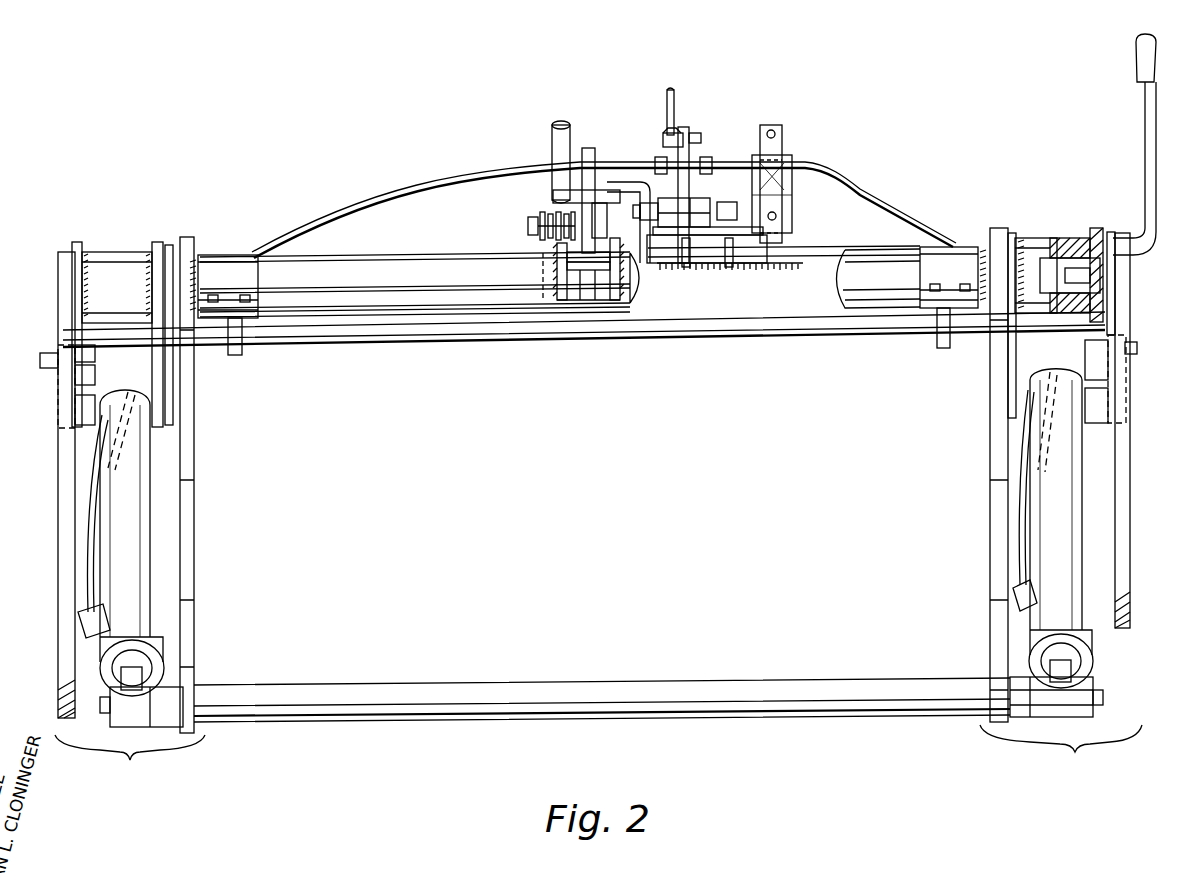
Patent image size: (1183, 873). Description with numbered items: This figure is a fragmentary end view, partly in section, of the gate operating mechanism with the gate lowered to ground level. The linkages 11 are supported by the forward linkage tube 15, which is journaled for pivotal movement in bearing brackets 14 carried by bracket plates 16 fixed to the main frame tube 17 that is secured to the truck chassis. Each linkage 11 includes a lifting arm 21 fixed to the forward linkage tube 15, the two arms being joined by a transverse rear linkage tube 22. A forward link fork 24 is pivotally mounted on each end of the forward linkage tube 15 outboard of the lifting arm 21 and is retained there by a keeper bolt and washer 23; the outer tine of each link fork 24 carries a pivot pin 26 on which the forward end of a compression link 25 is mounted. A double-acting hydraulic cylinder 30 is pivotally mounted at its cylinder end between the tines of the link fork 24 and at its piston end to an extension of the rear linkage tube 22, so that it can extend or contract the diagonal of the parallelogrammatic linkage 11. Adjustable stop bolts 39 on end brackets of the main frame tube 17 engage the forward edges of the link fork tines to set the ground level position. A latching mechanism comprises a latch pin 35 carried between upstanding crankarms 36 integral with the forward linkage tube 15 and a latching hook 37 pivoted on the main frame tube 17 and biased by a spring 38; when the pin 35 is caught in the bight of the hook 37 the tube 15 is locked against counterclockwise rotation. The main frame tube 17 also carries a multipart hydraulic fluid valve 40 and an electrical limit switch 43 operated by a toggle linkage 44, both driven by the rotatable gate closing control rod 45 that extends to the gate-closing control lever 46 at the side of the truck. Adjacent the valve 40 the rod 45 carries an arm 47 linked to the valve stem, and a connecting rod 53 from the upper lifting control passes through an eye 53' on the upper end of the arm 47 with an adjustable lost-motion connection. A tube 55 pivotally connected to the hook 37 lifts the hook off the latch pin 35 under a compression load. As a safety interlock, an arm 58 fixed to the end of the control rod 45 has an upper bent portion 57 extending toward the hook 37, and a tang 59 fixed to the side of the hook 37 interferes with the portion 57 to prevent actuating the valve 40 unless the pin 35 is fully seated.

The linkage 11 is at (598, 755).
The bearing bracket 14 is at (222, 255).
The forward linkage tube 15 is at (380, 270).
The bracket plate 16 is at (236, 355).
The main frame tube 17 is at (486, 338).
The lifting arm 21 is at (194, 577).
The rear linkage tube 22 is at (615, 685).
The keeper bolt and washer 23 is at (1112, 266).
The forward link fork 24 is at (105, 250).
The compression link 25 is at (60, 480).
The pivot pin 26 is at (45, 355).
The double-acting hydraulic cylinder 30 is at (155, 530).
The latch pin 35 is at (590, 285).
The crankarm 36 is at (556, 265).
The latching hook 37 is at (587, 148).
The spring 38 is at (548, 213).
The stop bolt 39 is at (66, 388).
The hydraulic fluid valve 40 is at (706, 205).
The electrical limit switch 43 is at (798, 160).
The toggle linkage 44 is at (783, 130).
The gate closing control rod 45 is at (820, 245).
The gate-closing control lever 46 is at (1145, 133).
The arm 47 is at (690, 150).
The connecting rod 53 is at (701, 102).
The eye 53' is at (649, 112).
The tube 55 is at (555, 140).
The upper bent portion 57 is at (632, 182).
The interlock arm 58 is at (670, 265).
The tang 59 is at (603, 197).